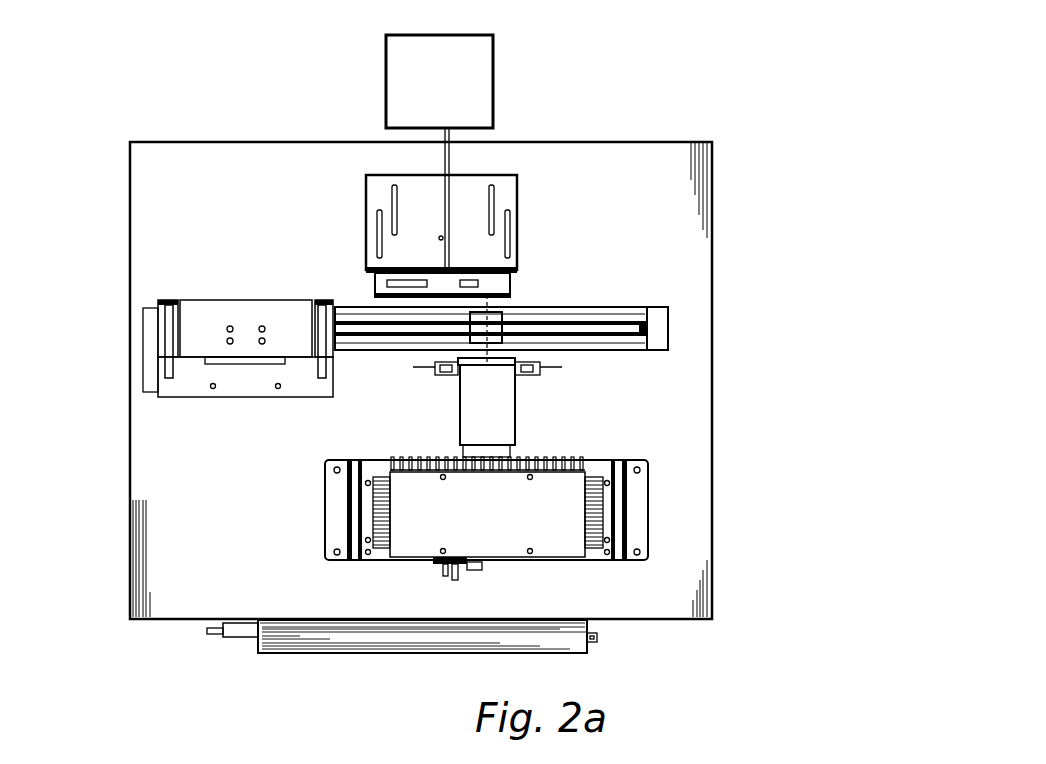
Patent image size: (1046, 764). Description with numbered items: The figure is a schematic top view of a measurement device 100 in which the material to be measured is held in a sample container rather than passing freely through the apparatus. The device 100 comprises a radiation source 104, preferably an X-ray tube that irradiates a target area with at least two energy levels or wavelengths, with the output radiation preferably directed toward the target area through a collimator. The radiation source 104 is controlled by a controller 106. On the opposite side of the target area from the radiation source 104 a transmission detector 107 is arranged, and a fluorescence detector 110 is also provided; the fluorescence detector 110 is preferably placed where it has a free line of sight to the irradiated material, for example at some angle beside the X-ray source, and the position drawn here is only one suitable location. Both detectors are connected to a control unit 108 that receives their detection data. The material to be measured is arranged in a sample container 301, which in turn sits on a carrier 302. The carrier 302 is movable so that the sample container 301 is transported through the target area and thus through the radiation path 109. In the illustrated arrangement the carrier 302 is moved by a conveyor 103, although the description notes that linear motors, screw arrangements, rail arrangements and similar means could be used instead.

The measurement device 100 is at (745, 85).
The conveyor 103 is at (635, 313).
The radiation source 104 is at (563, 522).
The controller 106 is at (568, 647).
The transmission detector 107 is at (497, 268).
The control unit 108 is at (463, 98).
The radiation path 109 is at (503, 310).
The fluorescence detector 110 is at (490, 318).
The sample container 301 is at (200, 308).
The carrier 302 is at (202, 372).